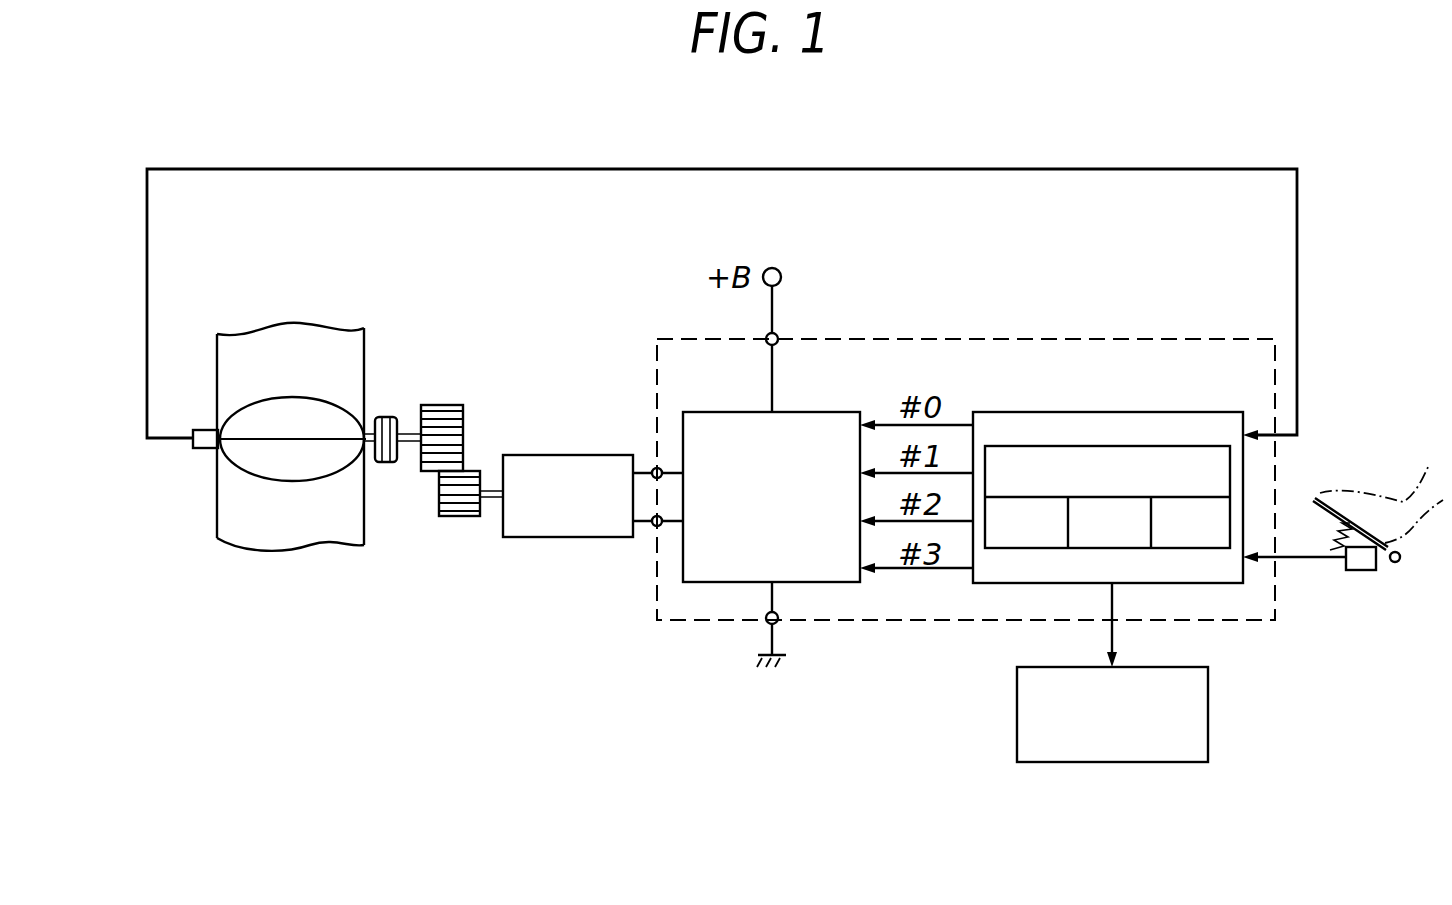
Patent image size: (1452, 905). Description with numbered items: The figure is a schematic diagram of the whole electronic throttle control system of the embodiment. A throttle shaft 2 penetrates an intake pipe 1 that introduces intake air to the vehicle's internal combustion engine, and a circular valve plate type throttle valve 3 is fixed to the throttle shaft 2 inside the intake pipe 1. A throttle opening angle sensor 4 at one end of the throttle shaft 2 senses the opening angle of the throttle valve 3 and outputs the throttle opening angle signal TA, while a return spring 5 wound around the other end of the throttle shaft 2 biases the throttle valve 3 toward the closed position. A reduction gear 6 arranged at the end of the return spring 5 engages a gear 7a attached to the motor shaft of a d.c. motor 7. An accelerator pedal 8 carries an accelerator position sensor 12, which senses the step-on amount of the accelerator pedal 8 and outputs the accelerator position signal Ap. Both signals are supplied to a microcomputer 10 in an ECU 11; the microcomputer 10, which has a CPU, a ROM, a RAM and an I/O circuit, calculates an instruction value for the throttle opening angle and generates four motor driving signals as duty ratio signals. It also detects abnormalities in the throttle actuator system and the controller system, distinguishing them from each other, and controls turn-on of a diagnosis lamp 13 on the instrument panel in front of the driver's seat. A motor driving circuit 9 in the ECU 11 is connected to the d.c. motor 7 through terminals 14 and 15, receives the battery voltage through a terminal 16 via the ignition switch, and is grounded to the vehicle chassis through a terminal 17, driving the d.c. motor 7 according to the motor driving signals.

The intake pipe 1 is at (217, 509).
The throttle shaft 2 is at (252, 440).
The throttle valve 3 is at (247, 414).
The throttle opening angle sensor 4 is at (200, 430).
The return spring 5 is at (388, 417).
The reduction gear 6 is at (441, 405).
The d.c. motor 7 is at (531, 455).
The gear 7a is at (462, 518).
The accelerator pedal 8 is at (1320, 509).
The motor driving circuit 9 is at (718, 412).
The microcomputer 10 is at (1200, 412).
The ECU 11 is at (1180, 340).
The accelerator position sensor 12 is at (1362, 571).
The diagnosis lamp 13 is at (1210, 688).
The terminal 14 is at (654, 468).
The terminal 15 is at (655, 527).
The terminal 16 is at (778, 335).
The terminal 17 is at (778, 622).